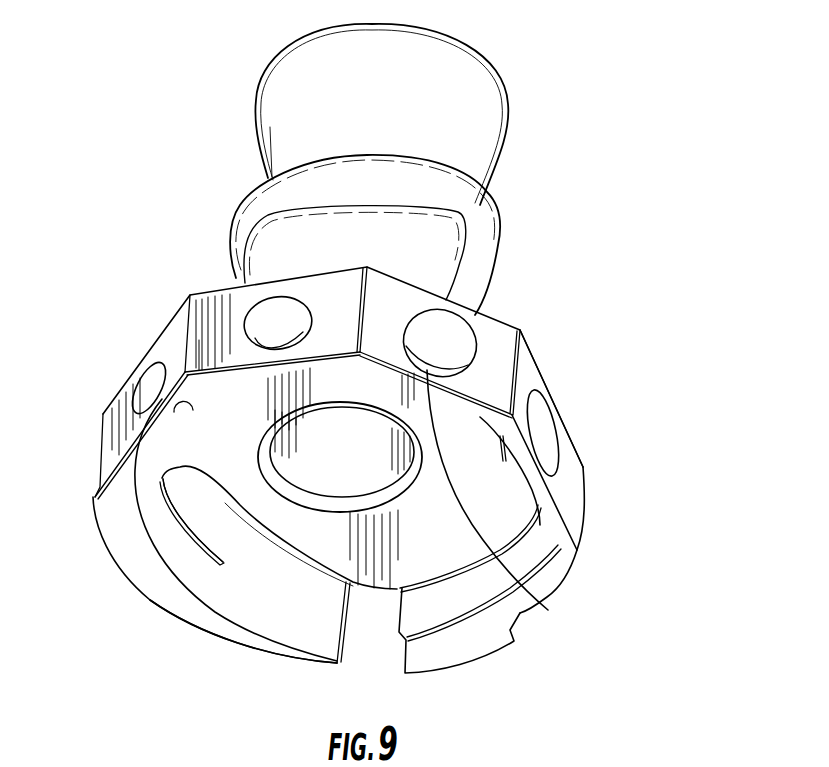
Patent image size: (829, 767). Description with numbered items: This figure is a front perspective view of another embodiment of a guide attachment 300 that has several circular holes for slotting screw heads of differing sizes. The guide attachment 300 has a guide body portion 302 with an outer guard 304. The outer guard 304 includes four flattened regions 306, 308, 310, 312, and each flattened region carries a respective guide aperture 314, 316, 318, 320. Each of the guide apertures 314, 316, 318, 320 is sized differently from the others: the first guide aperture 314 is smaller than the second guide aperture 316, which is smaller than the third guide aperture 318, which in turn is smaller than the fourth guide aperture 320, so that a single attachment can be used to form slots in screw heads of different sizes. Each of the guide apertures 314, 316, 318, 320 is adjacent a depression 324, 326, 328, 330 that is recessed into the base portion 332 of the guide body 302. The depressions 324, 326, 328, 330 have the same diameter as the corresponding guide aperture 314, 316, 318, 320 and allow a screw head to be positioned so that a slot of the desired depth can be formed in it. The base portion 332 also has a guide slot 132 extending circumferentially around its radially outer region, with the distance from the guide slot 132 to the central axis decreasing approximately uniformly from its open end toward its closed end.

The guide attachment 300 is at (195, 102).
The guide body portion 302 is at (575, 362).
The outer guard 304 is at (519, 608).
The flattened region 306 is at (172, 330).
The flattened region 308 is at (228, 296).
The flattened region 310 is at (500, 329).
The flattened region 312 is at (570, 496).
The first guide aperture 314 is at (150, 386).
The second guide aperture 316 is at (280, 308).
The third guide aperture 318 is at (446, 323).
The fourth guide aperture 320 is at (545, 433).
The depression 324 is at (185, 426).
The depression 326 is at (150, 575).
The depression 328 is at (540, 606).
The depression 330 is at (508, 470).
The base portion 332 is at (432, 548).
The guide slot 132 is at (288, 580).